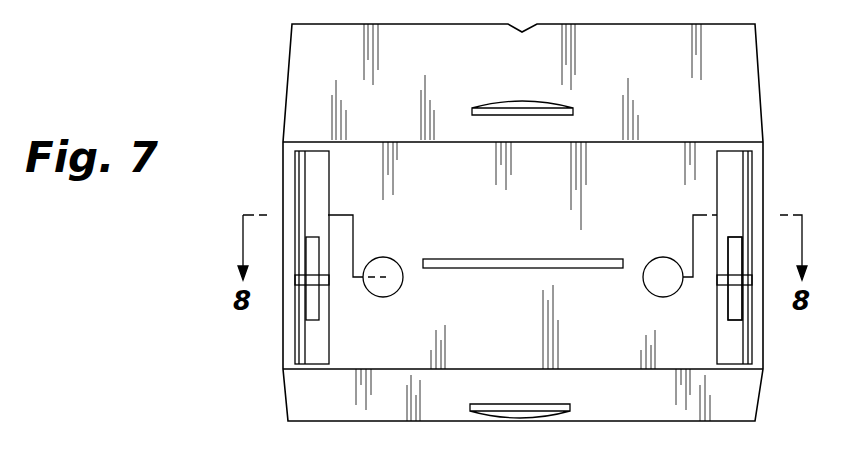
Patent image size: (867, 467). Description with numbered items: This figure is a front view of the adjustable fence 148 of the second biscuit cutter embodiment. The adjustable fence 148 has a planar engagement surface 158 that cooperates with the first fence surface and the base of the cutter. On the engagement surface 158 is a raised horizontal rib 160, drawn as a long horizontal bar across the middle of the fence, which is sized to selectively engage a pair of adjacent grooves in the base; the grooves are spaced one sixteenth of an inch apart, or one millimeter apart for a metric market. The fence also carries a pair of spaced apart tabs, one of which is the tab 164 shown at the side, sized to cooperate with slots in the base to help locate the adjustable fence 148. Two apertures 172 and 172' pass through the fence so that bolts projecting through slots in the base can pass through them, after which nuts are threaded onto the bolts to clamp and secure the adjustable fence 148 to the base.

The adjustable fence 148 is at (290, 40).
The planar engagement surface 158 is at (680, 327).
The raised horizontal rib 160 is at (533, 268).
The tab 164 is at (736, 258).
The aperture 172 is at (645, 241).
The aperture 172' is at (405, 241).